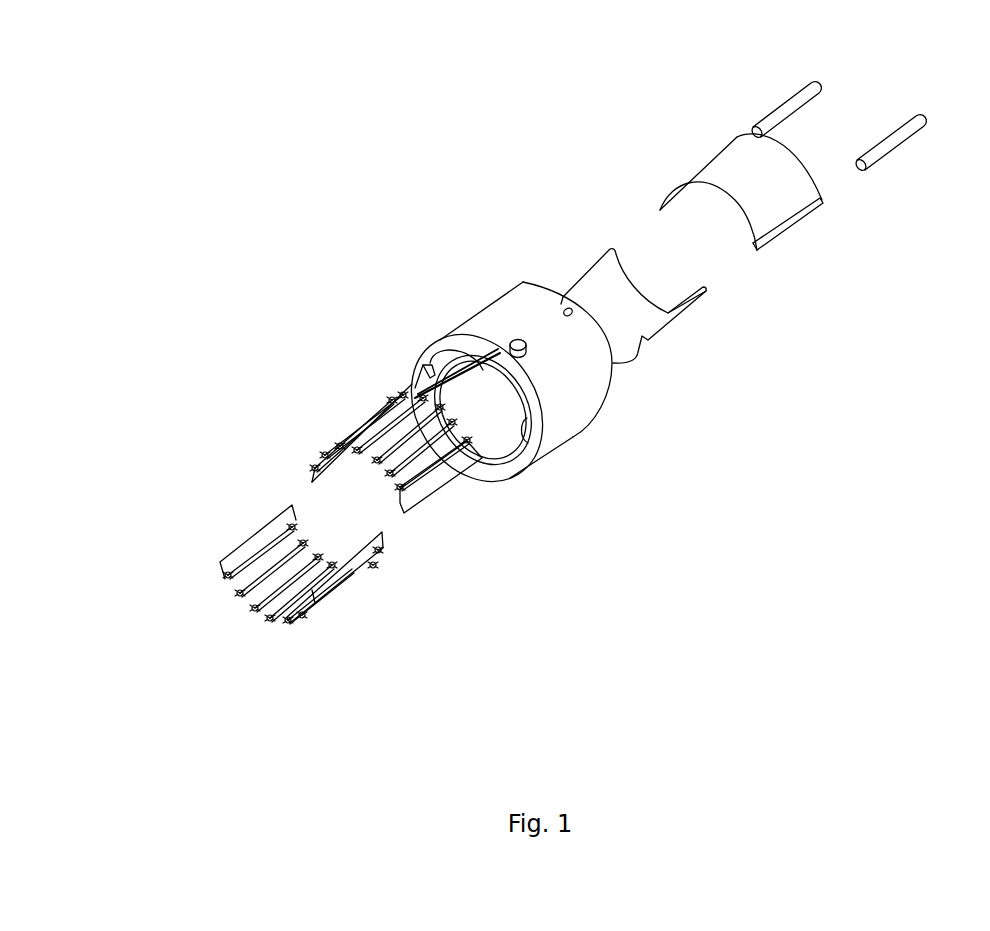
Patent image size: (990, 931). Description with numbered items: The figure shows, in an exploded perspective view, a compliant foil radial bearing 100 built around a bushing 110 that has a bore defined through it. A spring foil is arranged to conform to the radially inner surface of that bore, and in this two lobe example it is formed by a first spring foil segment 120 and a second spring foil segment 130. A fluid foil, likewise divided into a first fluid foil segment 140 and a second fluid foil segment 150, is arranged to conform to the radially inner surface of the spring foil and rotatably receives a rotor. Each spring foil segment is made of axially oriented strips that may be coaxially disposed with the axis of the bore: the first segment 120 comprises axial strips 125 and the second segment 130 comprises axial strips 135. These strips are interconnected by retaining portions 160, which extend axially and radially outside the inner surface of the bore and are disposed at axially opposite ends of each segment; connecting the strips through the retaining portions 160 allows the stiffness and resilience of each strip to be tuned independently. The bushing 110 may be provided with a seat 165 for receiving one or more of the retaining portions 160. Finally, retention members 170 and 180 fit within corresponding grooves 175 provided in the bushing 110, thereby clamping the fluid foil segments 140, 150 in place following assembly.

The compliant foil radial bearing 100 is at (283, 240).
The bushing 110 is at (484, 298).
The first spring foil segment 120 is at (333, 602).
The axial strips 125 is at (253, 543).
The second spring foil segment 130 is at (430, 472).
The axial strips 135 is at (452, 468).
The first fluid foil segment 140 is at (655, 347).
The second fluid foil segment 150 is at (780, 242).
The retaining portions 160 is at (255, 572).
The seat 165 is at (435, 353).
The retention member 170 is at (898, 160).
The grooves 175 is at (530, 437).
The retention member 180 is at (765, 110).